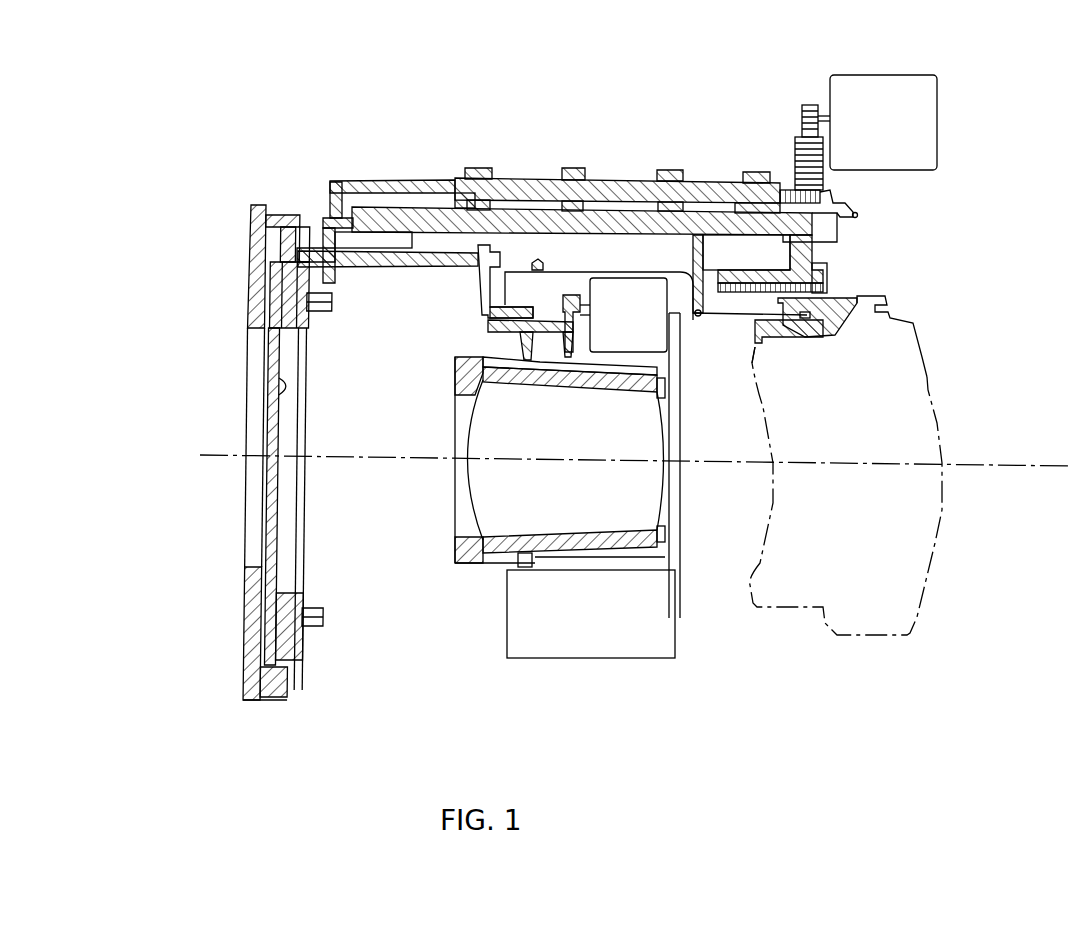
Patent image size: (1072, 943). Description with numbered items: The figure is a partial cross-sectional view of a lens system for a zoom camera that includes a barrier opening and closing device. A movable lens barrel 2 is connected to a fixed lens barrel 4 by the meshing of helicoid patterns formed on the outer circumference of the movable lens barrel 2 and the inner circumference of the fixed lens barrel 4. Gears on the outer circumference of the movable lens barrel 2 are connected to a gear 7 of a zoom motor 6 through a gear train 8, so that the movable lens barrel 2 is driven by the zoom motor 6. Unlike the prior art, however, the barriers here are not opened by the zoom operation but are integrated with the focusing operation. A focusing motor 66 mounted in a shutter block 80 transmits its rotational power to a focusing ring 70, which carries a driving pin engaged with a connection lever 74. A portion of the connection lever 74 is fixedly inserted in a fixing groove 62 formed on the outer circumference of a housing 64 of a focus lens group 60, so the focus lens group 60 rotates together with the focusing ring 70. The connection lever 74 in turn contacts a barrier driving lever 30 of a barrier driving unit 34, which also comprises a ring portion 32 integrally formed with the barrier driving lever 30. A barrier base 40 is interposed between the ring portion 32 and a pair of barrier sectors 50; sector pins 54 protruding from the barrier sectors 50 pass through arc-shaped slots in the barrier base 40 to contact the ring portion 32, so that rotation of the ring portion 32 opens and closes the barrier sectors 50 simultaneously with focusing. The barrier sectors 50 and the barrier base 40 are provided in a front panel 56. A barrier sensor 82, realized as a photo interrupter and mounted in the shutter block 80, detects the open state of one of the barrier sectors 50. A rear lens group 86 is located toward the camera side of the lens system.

The movable lens barrel 2 is at (421, 181).
The fixed lens barrel 4 is at (355, 181).
The zoom motor 6 is at (937, 125).
The gear 7 is at (806, 105).
The gear train 8 is at (790, 145).
The barrier driving lever 30 is at (447, 258).
The ring portion 32 is at (322, 250).
The barrier driving unit 34 is at (273, 409).
The barrier base 40 is at (290, 670).
The barrier sectors 50 is at (283, 396).
The sector pins 54 is at (332, 302).
The front panel 56 is at (250, 293).
The focus lens group 60 is at (470, 575).
The fixing groove 62 is at (522, 568).
The housing 64 is at (613, 558).
The focusing motor 66 is at (650, 323).
The focusing ring 70 is at (548, 323).
The connection lever 74 is at (478, 302).
The shutter block 80 is at (633, 655).
The barrier sensor 82 is at (537, 259).
The rear lens group 86 is at (955, 530).